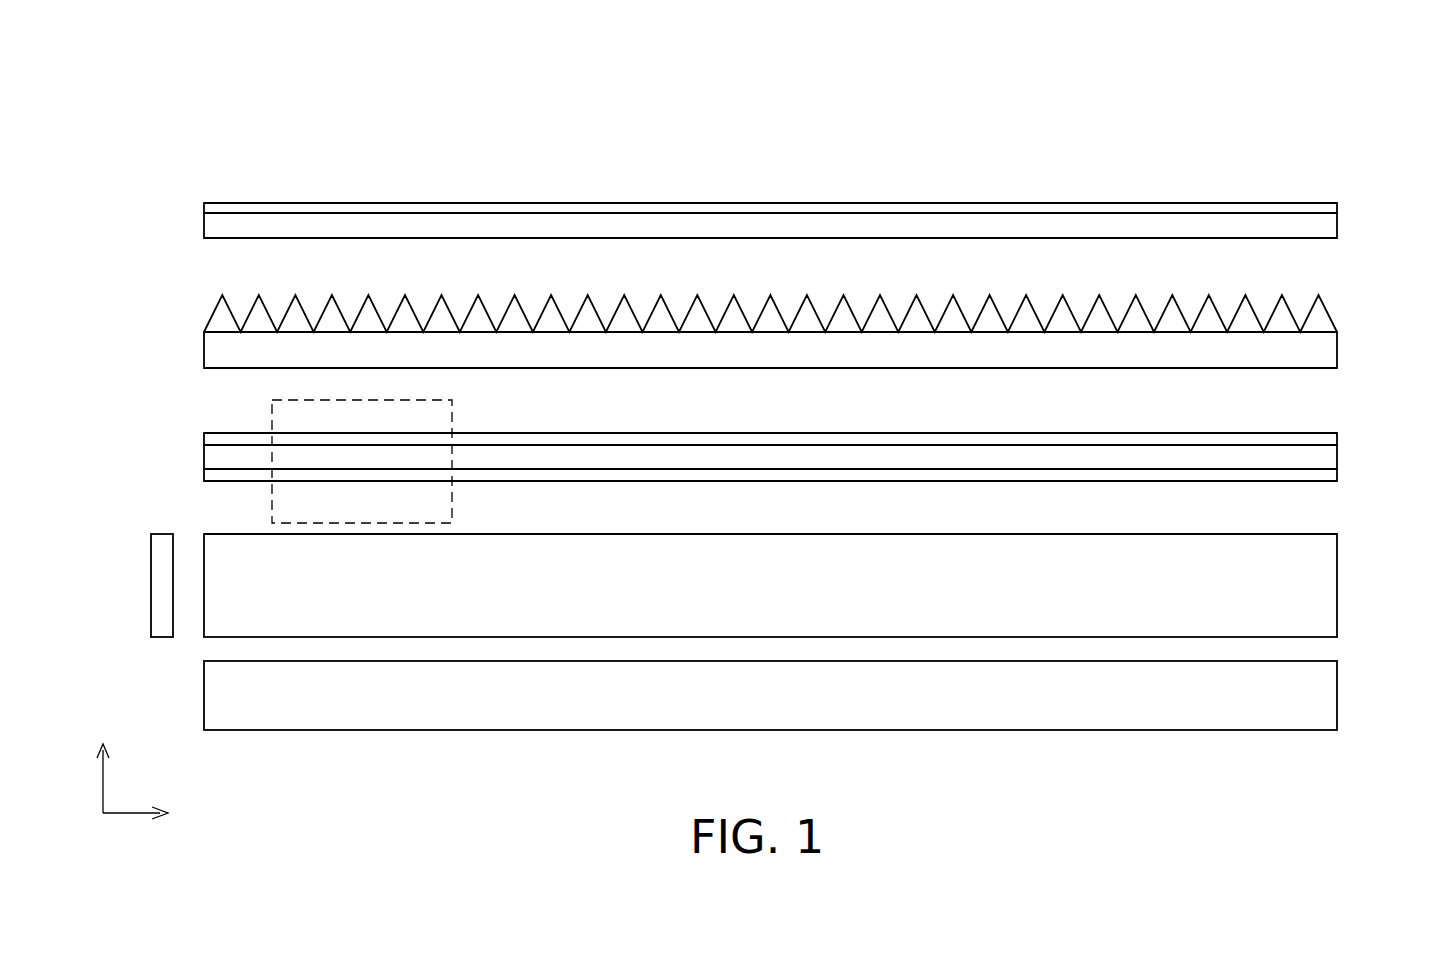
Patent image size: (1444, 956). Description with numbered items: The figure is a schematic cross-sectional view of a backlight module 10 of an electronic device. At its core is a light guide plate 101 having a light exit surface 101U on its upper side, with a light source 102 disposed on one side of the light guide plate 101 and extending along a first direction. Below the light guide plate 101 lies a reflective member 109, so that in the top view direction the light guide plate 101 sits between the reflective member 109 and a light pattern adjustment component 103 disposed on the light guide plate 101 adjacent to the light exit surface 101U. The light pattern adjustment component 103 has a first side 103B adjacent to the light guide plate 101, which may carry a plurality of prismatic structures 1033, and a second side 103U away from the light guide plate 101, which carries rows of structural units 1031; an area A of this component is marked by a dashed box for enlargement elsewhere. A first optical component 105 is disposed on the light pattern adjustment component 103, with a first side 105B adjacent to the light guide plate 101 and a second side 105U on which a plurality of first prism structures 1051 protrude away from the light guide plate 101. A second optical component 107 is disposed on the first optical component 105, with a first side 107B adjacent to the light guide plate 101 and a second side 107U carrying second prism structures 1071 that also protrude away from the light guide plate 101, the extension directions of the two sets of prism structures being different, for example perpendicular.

The backlight module 10 is at (172, 73).
The second optical component 107 is at (820, 207).
The second side of second optical component 107U is at (1325, 203).
The first side of second optical component 107B is at (1325, 238).
The second prism structures 1071 is at (1228, 208).
The first optical component 105 is at (820, 333).
The second side of first optical component 105U is at (1330, 330).
The first side of first optical component 105B is at (1325, 368).
The first prism structures 1051 is at (1248, 307).
The light pattern adjustment component 103 is at (820, 457).
The second side of light pattern adjustment component 103U is at (1325, 433).
The first side of light pattern adjustment component 103B is at (1325, 481).
The structural units 1031 is at (1202, 438).
The prismatic structures 1033 is at (1202, 473).
The light guide plate 101 is at (817, 581).
The light exit surface 101U is at (1322, 534).
The light source 102 is at (150, 572).
The reflective member 109 is at (1328, 695).
The area A is at (271, 418).